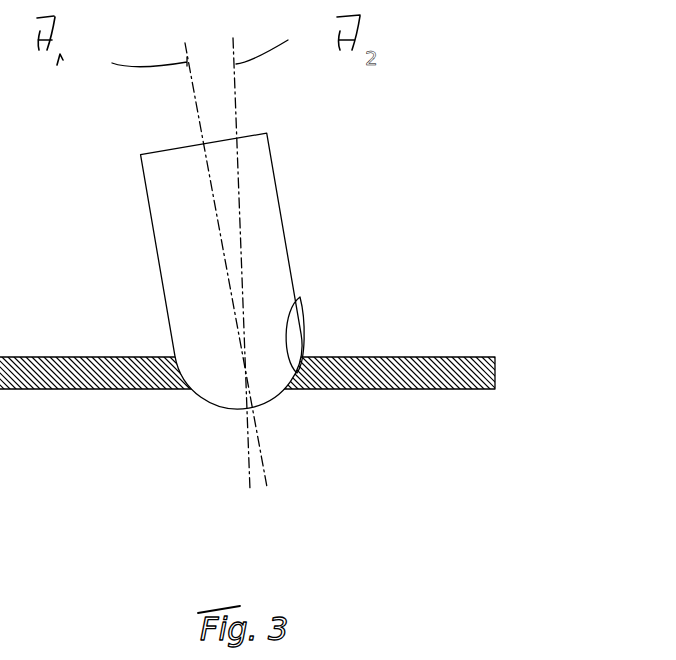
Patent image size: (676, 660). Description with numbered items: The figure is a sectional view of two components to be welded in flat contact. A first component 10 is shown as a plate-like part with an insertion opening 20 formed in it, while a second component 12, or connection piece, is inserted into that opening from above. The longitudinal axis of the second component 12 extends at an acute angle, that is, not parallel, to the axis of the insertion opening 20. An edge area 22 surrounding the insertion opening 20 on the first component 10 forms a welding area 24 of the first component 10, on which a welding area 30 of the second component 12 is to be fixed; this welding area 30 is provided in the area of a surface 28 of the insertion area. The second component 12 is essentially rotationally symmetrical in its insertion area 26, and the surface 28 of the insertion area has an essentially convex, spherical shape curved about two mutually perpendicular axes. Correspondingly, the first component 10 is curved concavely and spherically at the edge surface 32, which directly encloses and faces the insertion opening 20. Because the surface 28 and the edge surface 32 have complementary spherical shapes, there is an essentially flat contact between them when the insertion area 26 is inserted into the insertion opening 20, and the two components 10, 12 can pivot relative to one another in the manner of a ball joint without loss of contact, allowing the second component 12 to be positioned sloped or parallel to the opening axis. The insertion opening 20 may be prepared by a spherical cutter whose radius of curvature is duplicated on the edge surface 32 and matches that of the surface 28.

The first component 10 is at (496, 366).
The second component 12 is at (278, 190).
The insertion opening 20 is at (221, 436).
The edge area 22 is at (308, 357).
The welding area 24 is at (149, 341).
The insertion area 26 is at (217, 385).
The surface of the insertion area 28 is at (277, 397).
The welding area 30 is at (277, 420).
The edge surface 32 is at (300, 297).